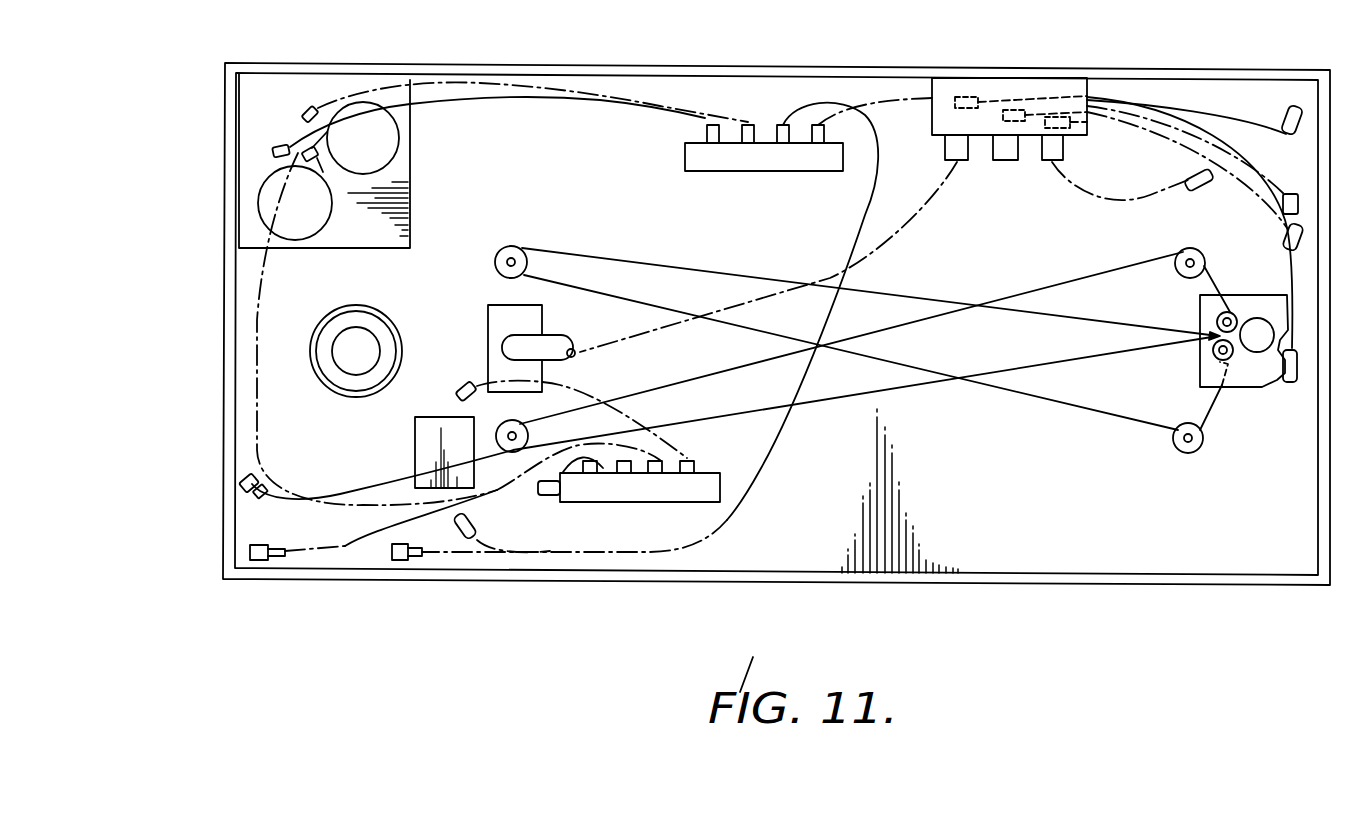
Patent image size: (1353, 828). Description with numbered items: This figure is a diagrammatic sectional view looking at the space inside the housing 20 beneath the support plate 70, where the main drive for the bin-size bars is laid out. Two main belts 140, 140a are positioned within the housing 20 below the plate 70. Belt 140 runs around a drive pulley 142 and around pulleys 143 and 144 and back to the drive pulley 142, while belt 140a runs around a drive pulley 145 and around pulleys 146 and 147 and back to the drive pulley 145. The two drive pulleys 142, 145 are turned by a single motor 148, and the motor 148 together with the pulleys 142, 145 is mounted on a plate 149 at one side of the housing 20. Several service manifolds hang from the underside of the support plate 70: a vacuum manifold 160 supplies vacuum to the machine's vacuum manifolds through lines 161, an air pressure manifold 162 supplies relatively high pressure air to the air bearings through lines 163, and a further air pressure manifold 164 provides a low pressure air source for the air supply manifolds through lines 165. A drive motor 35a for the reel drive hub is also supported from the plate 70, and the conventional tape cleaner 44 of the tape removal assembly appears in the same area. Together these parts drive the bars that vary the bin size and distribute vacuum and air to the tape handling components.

The housing 20 is at (1083, 582).
The drive motor 35a is at (312, 363).
The tape cleaner 44 is at (420, 445).
The support plate 70 is at (828, 490).
The main belt 140 is at (1015, 410).
The main belt 140a is at (1062, 366).
The drive pulley 142 is at (1214, 355).
The pulley 143 is at (1193, 453).
The pulley 144 is at (510, 247).
The drive pulley 145 is at (1203, 314).
The pulley 146 is at (1185, 250).
The pulley 147 is at (513, 440).
The motor 148 is at (1257, 345).
The plate 149 is at (1243, 293).
The vacuum manifold 160 is at (603, 490).
The lines 161 is at (350, 546).
The air pressure manifold 162 is at (720, 160).
The lines 163 is at (540, 100).
The air pressure manifold 164 is at (1018, 90).
The lines 165 is at (1100, 200).